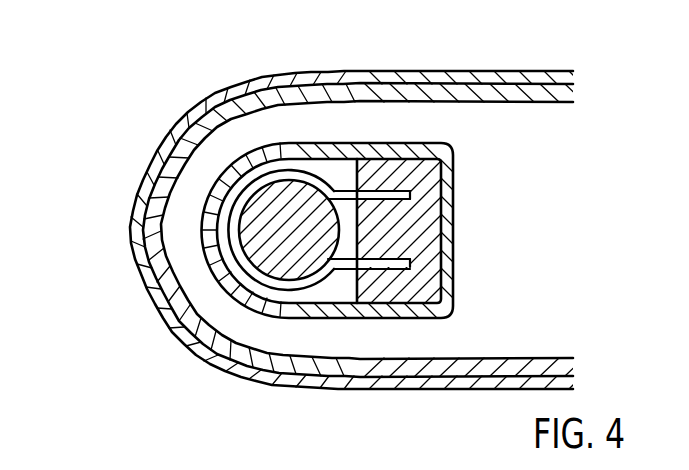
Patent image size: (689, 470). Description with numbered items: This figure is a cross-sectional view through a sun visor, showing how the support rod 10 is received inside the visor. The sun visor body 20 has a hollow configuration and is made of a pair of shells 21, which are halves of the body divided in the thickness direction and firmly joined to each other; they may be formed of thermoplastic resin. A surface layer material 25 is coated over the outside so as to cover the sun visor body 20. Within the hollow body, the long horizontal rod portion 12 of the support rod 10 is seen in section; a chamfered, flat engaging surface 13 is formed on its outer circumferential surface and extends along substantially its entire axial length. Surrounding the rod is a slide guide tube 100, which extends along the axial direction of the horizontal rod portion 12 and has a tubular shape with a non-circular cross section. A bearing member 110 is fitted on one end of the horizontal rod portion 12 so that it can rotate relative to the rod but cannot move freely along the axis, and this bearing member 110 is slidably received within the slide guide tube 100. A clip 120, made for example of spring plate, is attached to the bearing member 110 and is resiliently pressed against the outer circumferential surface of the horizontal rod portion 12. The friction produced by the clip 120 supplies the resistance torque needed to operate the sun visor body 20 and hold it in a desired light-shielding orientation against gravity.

The support rod 10 is at (289, 227).
The horizontal rod portion 12 is at (293, 265).
The engaging surface 13 is at (295, 182).
The sun visor body 20 is at (63, 173).
The shells 21 is at (148, 206).
The surface layer material 25 is at (212, 105).
The slide guide tube 100 is at (218, 180).
The bearing member 110 is at (375, 170).
The clip 120 is at (230, 287).